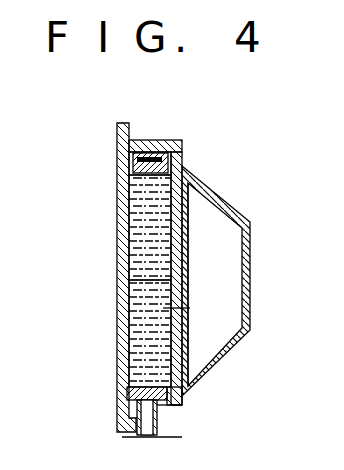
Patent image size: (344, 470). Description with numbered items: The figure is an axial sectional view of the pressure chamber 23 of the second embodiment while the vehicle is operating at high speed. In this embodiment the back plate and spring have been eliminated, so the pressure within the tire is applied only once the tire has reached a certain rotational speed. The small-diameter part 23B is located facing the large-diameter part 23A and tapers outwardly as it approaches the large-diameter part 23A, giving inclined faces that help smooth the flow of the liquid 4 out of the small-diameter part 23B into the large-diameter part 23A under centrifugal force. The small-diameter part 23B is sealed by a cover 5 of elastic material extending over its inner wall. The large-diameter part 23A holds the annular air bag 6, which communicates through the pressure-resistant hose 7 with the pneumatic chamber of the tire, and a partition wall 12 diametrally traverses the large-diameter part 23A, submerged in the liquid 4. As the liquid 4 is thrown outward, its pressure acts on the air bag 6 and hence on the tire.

The pressure chamber 23 is at (122, 253).
The large-diameter part 23A is at (157, 140).
The small-diameter part 23B is at (232, 206).
The liquid 4 is at (142, 205).
The cover 5 is at (189, 277).
The annular air bag 6 is at (140, 174).
The pressure-resistant hose 7 is at (157, 430).
The partition wall 12 is at (143, 280).